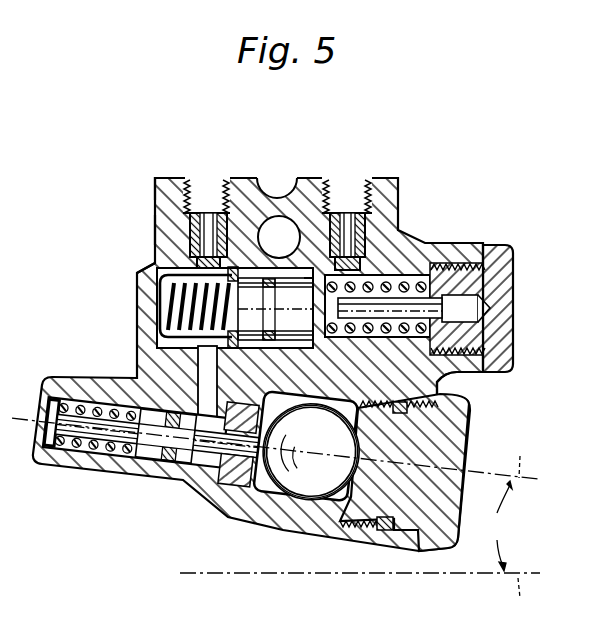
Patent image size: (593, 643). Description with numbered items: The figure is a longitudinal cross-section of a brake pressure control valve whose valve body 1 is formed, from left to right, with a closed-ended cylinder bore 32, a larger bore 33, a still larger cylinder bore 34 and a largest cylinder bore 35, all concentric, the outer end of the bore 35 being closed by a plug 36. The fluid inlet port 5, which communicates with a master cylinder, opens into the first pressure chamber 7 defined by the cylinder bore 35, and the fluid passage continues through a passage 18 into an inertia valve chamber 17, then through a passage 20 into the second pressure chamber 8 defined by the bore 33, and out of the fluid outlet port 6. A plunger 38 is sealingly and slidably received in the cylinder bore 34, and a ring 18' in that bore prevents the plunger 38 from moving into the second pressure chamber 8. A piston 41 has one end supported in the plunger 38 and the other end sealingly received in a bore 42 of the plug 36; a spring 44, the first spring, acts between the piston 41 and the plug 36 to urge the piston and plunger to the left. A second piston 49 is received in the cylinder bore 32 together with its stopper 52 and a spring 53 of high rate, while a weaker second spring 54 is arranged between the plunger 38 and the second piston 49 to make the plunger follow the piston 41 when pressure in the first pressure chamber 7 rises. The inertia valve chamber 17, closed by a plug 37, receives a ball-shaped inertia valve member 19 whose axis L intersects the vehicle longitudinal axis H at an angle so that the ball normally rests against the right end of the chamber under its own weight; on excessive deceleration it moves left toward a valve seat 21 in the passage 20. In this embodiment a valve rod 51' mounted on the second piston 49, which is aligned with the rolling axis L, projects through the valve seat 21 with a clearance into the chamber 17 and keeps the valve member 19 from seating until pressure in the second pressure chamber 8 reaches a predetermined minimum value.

The valve body 1 is at (140, 315).
The fluid inlet port 5 is at (347, 192).
The fluid outlet port 6 is at (206, 190).
The first pressure chamber 7 is at (396, 274).
The second pressure chamber 8 is at (157, 182).
The inertia valve chamber 17 is at (283, 494).
The passage 18 is at (478, 393).
The ring 18' is at (224, 204).
The inertia valve member 19 is at (330, 508).
The passage 20 is at (207, 380).
The valve seat 21 is at (257, 506).
The cylinder bore 32 is at (88, 447).
The bore 33 is at (157, 230).
The cylinder bore 34 is at (240, 270).
The larger diameter cylinder bore 35 is at (366, 282).
The plug 36 is at (447, 265).
The plug 37 is at (447, 550).
The plunger 38 is at (287, 290).
The piston 41 is at (310, 279).
The bore 42 is at (466, 290).
The spring 44 is at (387, 298).
The second piston 49 is at (185, 450).
The valve rod 51' is at (236, 480).
The stopper 52 is at (105, 452).
The spring 53 is at (55, 450).
The spring 54 is at (147, 264).
The axis L is at (519, 454).
The longitudinal axis H is at (360, 597).